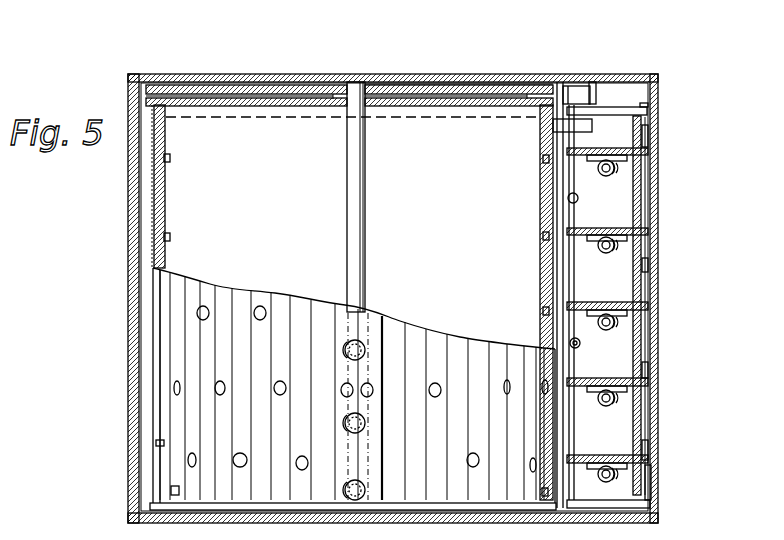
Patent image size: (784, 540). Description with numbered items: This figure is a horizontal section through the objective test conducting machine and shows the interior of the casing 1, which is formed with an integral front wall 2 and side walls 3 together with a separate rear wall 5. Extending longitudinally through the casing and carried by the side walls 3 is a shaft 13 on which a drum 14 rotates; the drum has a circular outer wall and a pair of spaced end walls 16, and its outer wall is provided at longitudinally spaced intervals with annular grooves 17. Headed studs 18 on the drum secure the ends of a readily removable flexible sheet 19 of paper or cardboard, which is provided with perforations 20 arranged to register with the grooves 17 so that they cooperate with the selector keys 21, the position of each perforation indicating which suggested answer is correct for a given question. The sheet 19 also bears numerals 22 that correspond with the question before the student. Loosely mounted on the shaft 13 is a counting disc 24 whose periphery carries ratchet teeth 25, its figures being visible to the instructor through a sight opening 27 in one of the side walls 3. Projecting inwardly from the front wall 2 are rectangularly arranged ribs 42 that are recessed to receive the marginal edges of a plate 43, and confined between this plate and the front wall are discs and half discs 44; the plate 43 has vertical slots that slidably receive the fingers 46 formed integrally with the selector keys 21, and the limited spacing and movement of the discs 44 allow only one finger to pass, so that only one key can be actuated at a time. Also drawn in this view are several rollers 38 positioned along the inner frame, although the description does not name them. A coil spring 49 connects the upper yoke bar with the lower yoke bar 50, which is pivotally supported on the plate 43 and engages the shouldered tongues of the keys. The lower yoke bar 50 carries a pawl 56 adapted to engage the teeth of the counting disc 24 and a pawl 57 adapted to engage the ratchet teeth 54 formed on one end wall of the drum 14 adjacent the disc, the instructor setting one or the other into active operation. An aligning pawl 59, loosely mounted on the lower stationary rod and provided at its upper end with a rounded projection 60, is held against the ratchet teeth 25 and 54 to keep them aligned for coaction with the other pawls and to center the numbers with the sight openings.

The casing 1 is at (106, 355).
The front wall 2 is at (655, 395).
The side walls 3 is at (482, 75).
The rear wall 5 is at (128, 251).
The shaft 13 is at (358, 262).
The drum 14 is at (541, 193).
The end walls 16 is at (421, 107).
The annular grooves 17 is at (170, 158).
The headed studs 18 is at (364, 342).
The flexible sheet 19 is at (298, 302).
The perforations 20 is at (205, 311).
The selector keys 21 is at (597, 380).
The numerals 22 is at (160, 444).
The counting disc 24 is at (232, 88).
The ratchet teeth 25 is at (143, 77).
The sight opening 27 is at (518, 80).
The roller 38 is at (620, 172).
The ribs 42 is at (645, 502).
The plate 43 is at (640, 245).
The discs and half discs 44 is at (652, 270).
The fingers 46 is at (641, 235).
The coil spring 49 is at (573, 200).
The lower yoke bar 50 is at (617, 110).
The ratchet teeth 54 is at (147, 97).
The pawl 56 is at (573, 85).
The pawl 57 is at (596, 92).
The aligning pawl 59 is at (572, 130).
The projection 60 is at (553, 122).